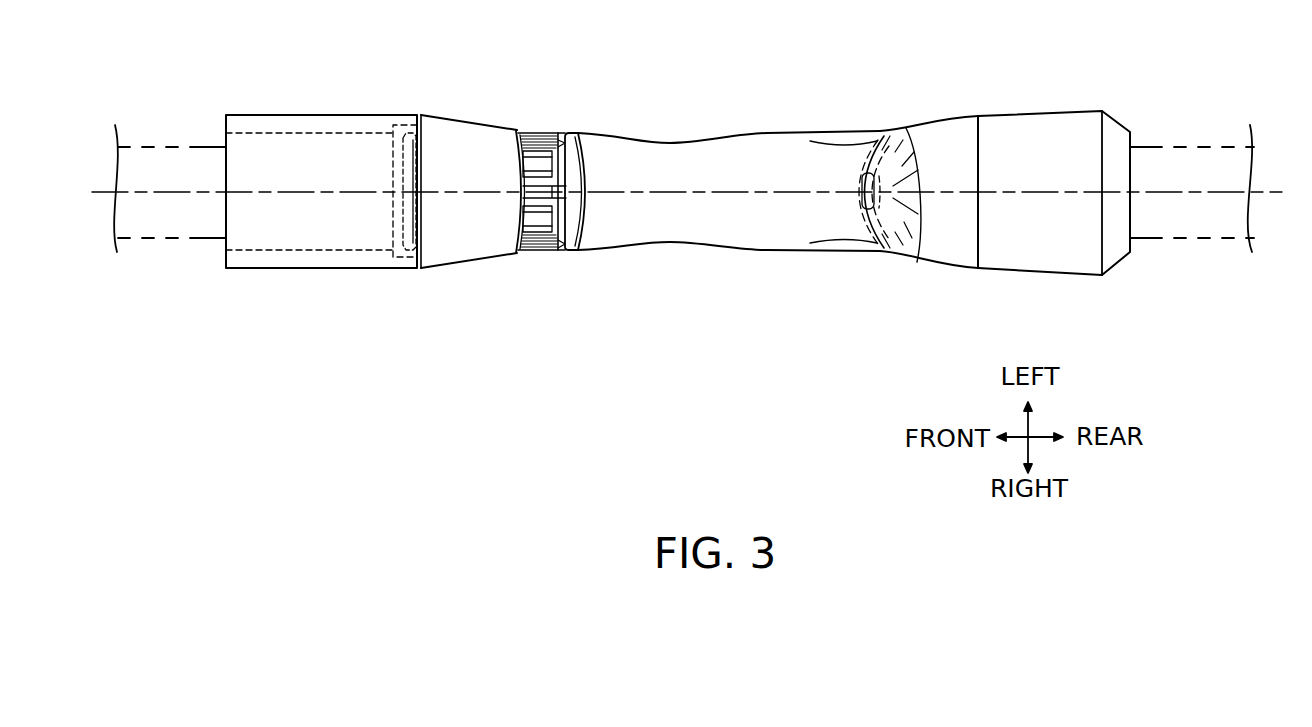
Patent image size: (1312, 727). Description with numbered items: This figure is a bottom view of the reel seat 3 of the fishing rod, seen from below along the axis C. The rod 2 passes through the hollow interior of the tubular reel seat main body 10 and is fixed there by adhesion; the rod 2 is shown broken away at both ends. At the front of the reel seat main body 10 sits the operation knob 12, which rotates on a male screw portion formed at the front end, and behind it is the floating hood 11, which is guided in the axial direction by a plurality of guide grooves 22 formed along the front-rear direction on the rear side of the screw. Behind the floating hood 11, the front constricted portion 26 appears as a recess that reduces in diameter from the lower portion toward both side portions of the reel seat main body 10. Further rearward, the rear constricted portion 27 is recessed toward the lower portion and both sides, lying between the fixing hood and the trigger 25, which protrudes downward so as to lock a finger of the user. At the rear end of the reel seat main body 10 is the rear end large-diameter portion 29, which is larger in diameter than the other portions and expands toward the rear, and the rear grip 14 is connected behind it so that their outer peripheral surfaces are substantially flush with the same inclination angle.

The rod 2 is at (147, 143).
The reel seat 3 is at (760, 367).
The reel seat main body 10 is at (673, 292).
The floating hood 11 is at (463, 212).
The operation knob 12 is at (287, 114).
The rear grip 14 is at (1050, 130).
The guide groove 22 is at (545, 170).
The trigger 25 is at (917, 262).
The front constricted portion 26 is at (678, 175).
The rear constricted portion 27 is at (888, 135).
The rear end large-diameter portion 29 is at (968, 112).
The axis C is at (1266, 190).